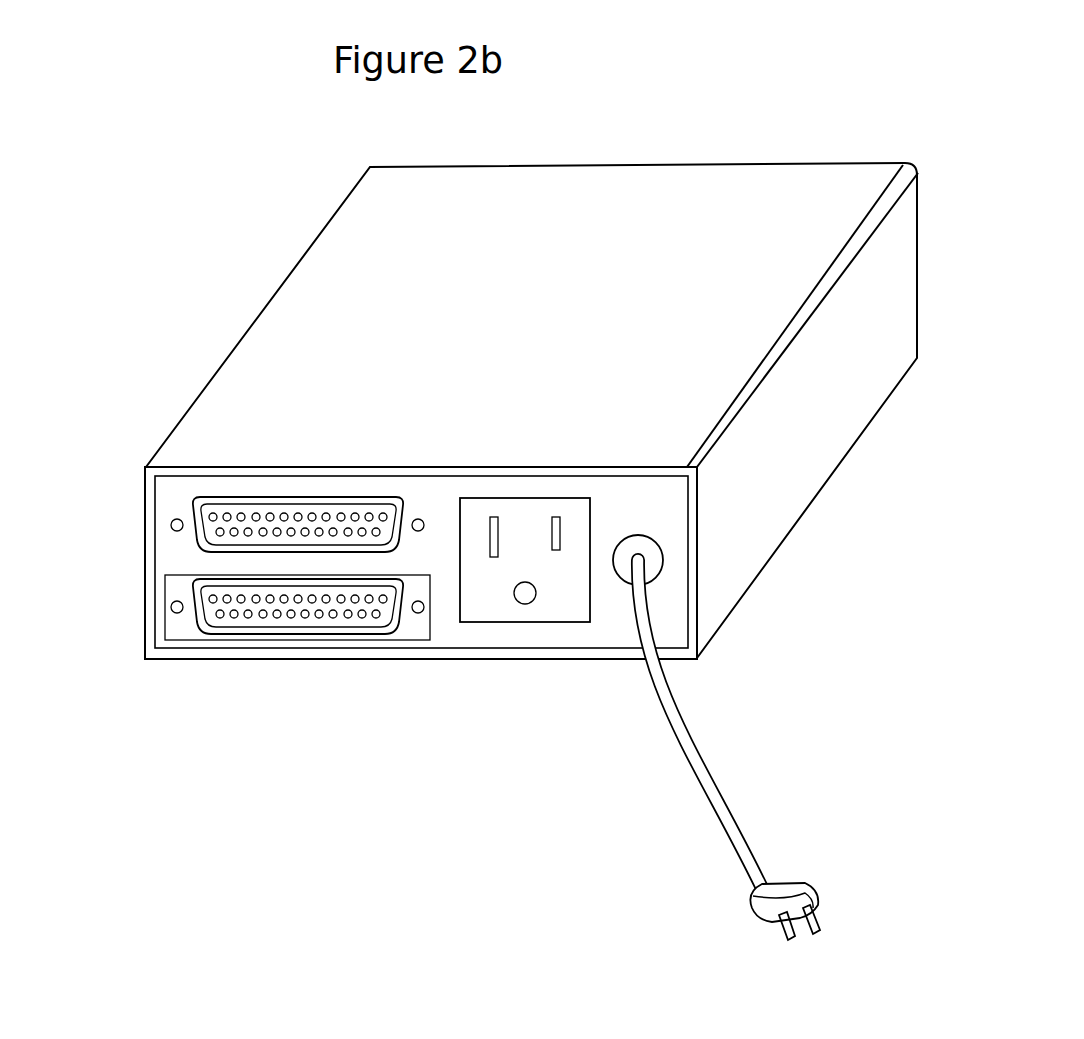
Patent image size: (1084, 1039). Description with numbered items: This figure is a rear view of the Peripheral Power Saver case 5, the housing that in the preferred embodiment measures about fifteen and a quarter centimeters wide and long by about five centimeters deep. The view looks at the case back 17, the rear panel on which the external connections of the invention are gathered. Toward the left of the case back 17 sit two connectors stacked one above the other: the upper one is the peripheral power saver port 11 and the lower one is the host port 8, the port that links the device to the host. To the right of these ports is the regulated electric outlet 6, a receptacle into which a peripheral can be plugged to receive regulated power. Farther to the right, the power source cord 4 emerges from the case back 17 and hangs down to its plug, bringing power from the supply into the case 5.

The power source cord 4 is at (715, 822).
The Peripheral Power Saver case 5 is at (778, 490).
The regulated electric outlet 6 is at (528, 520).
The host port 8 is at (203, 615).
The peripheral power saver port 11 is at (208, 527).
The case back 17 is at (525, 565).